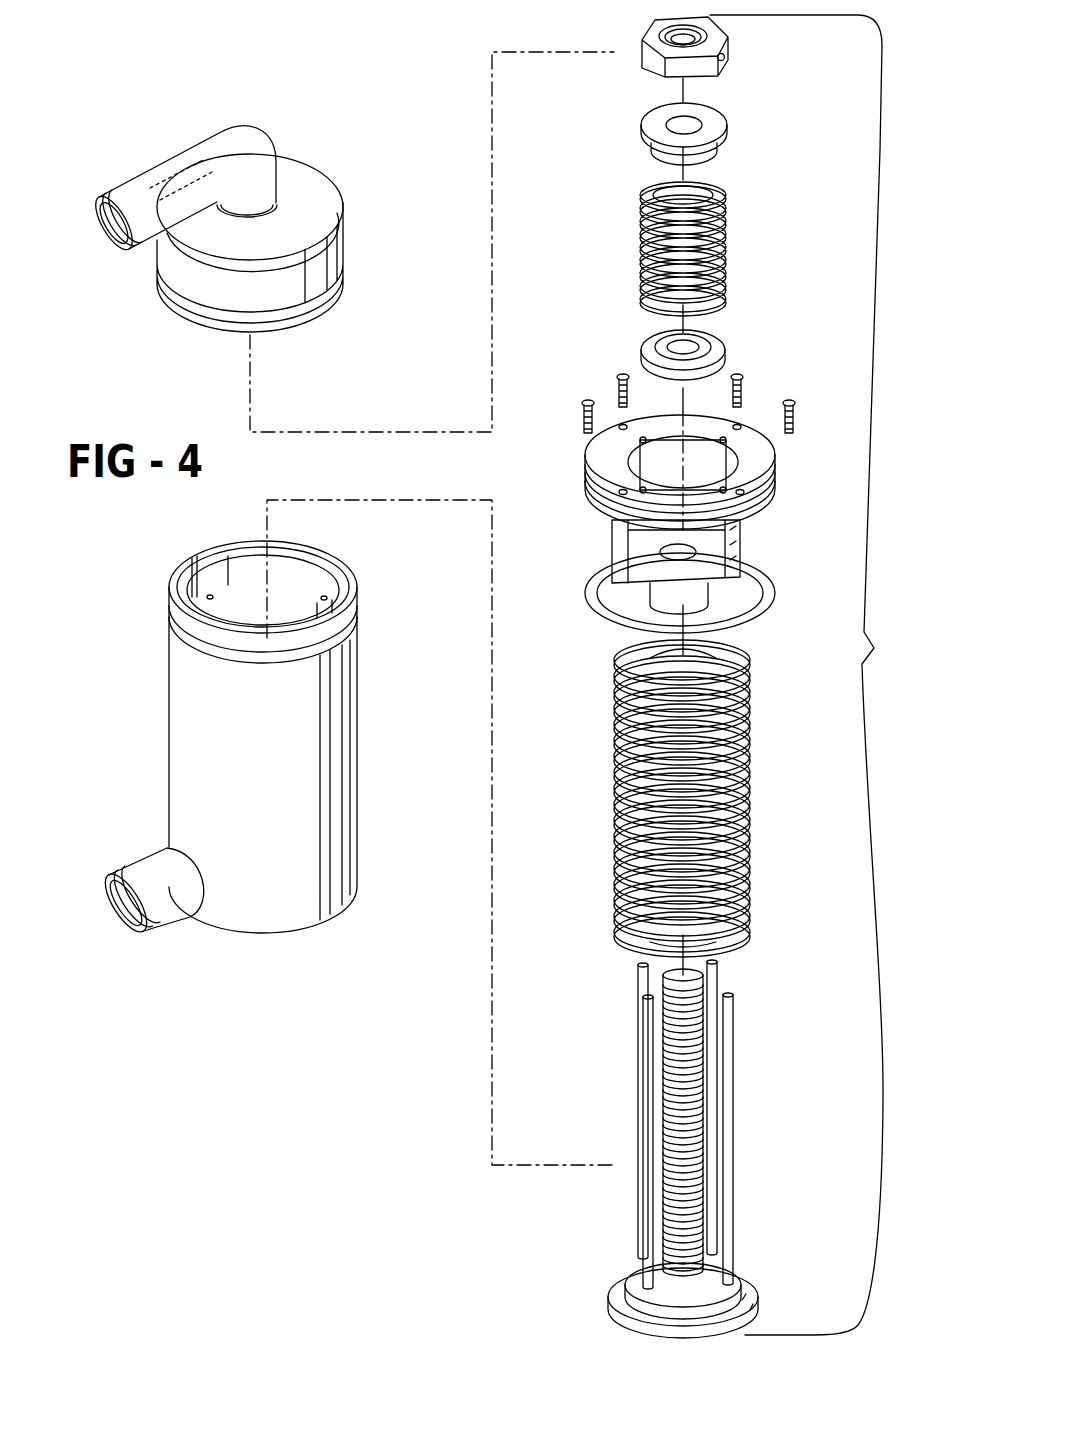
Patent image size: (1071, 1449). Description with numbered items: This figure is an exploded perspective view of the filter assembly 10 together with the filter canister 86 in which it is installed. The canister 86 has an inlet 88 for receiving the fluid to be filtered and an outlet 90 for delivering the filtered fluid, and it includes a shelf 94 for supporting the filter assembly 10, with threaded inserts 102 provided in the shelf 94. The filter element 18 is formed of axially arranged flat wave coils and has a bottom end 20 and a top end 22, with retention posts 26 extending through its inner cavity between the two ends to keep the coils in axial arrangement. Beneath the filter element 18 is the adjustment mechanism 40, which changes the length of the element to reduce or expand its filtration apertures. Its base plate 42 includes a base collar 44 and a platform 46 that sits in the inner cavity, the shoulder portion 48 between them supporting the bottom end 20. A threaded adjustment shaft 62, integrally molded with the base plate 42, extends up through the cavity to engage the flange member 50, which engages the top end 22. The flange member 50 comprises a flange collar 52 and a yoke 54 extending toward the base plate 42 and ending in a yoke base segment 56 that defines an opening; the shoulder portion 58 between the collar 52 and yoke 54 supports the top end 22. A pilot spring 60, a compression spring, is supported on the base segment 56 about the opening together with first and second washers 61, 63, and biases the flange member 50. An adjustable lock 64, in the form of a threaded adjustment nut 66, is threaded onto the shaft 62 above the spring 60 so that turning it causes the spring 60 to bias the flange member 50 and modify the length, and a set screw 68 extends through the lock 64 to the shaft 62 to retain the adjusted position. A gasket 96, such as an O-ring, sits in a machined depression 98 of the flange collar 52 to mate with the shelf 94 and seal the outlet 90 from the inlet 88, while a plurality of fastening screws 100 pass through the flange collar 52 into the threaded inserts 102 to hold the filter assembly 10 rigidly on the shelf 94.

The filter assembly 10 is at (825, 78).
The filter element 18 is at (773, 801).
The bottom end 20 is at (722, 932).
The top end 22 is at (742, 650).
The retention post 26 is at (730, 1025).
The adjustment mechanism 40 is at (679, 672).
The base plate 42 is at (554, 1226).
The base collar 44 is at (612, 1312).
The platform 46 is at (630, 1266).
The shoulder portion 48 is at (757, 1285).
The flange member 50 is at (554, 491).
The flange collar 52 is at (745, 432).
The yoke 54 is at (742, 541).
The yoke base segment 56 is at (716, 560).
The shoulder portion 58 is at (648, 452).
The pilot spring 60 is at (725, 250).
The first washer 61 is at (719, 352).
The adjustment shaft 62 is at (662, 990).
The second washer 63 is at (712, 130).
The adjustable lock 64 is at (602, 112).
The threaded adjustment nut 66 is at (660, 23).
The set screw 68 is at (724, 62).
The filter canister 86 is at (343, 253).
The inlet 88 is at (134, 922).
The outlet 90 is at (97, 240).
The shelf 94 is at (327, 598).
The gasket 96 is at (772, 588).
The machined depression 98 is at (775, 485).
The fastening screws 100 is at (585, 403).
The threaded inserts 102 is at (325, 598).